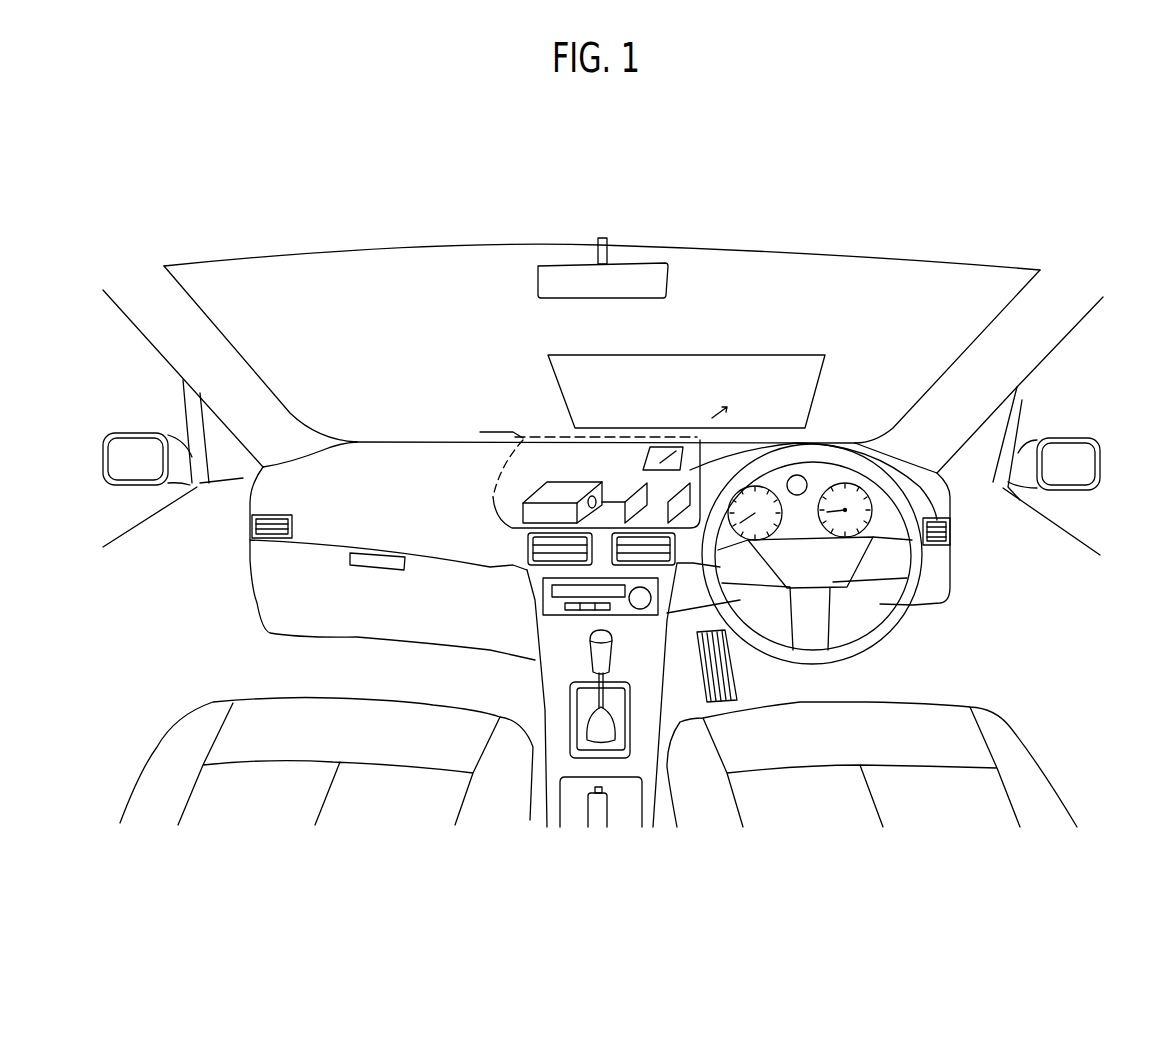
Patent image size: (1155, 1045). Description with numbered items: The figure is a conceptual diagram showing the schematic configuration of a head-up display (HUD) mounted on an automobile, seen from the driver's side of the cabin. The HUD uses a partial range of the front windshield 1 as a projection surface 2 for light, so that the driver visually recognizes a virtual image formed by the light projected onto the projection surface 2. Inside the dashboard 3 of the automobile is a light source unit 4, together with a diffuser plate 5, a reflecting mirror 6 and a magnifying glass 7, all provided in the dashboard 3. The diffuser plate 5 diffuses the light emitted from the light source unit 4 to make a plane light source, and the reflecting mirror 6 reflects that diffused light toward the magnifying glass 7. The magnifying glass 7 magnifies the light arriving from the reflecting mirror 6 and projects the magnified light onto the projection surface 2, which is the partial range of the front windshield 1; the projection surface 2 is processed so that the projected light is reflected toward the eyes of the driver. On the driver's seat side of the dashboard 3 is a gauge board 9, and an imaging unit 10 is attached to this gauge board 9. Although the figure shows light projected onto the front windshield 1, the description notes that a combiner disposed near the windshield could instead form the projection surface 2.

The front windshield 1 is at (325, 260).
The projection surface 2 is at (548, 356).
The dashboard 3 is at (452, 437).
The light source unit 4 is at (552, 485).
The diffuser plate 5 is at (623, 502).
The reflecting mirror 6 is at (672, 502).
The magnifying glass 7 is at (653, 446).
The gauge board 9 is at (823, 477).
The imaging unit 10 is at (797, 495).